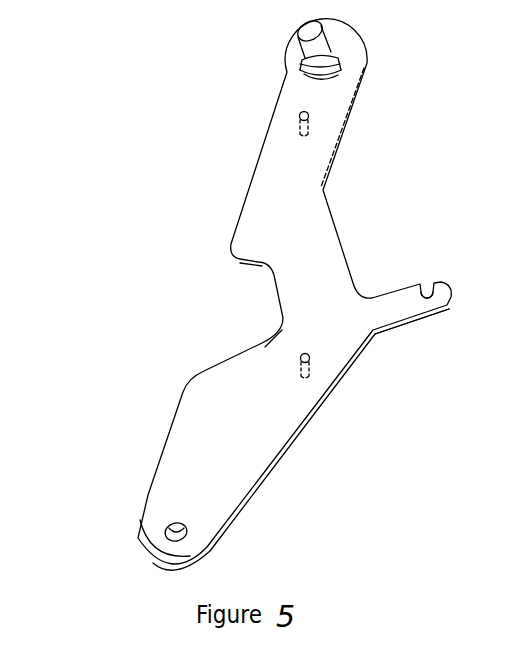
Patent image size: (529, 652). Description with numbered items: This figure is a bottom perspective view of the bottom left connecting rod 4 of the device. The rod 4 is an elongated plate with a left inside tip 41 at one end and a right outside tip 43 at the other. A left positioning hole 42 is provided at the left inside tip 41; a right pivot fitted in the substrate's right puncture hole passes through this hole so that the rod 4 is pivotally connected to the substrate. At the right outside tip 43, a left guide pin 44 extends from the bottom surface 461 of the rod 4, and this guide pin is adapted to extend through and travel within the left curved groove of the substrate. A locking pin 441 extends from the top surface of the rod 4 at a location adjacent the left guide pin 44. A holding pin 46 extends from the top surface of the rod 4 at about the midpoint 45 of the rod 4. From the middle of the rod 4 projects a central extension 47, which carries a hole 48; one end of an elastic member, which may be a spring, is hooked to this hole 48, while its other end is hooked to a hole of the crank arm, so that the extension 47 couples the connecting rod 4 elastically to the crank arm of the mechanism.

The bottom left connecting rod 4 is at (352, 473).
The left inside tip 41 is at (152, 542).
The left positioning hole 42 is at (170, 530).
The right outside tip 43 is at (337, 106).
The left guide pin 44 is at (343, 62).
The locking pin 441 is at (300, 122).
The midpoint 45 is at (230, 390).
The holding pin 46 is at (312, 368).
The bottom surface 461 is at (303, 230).
The central extension 47 is at (405, 298).
The hole 48 is at (433, 283).